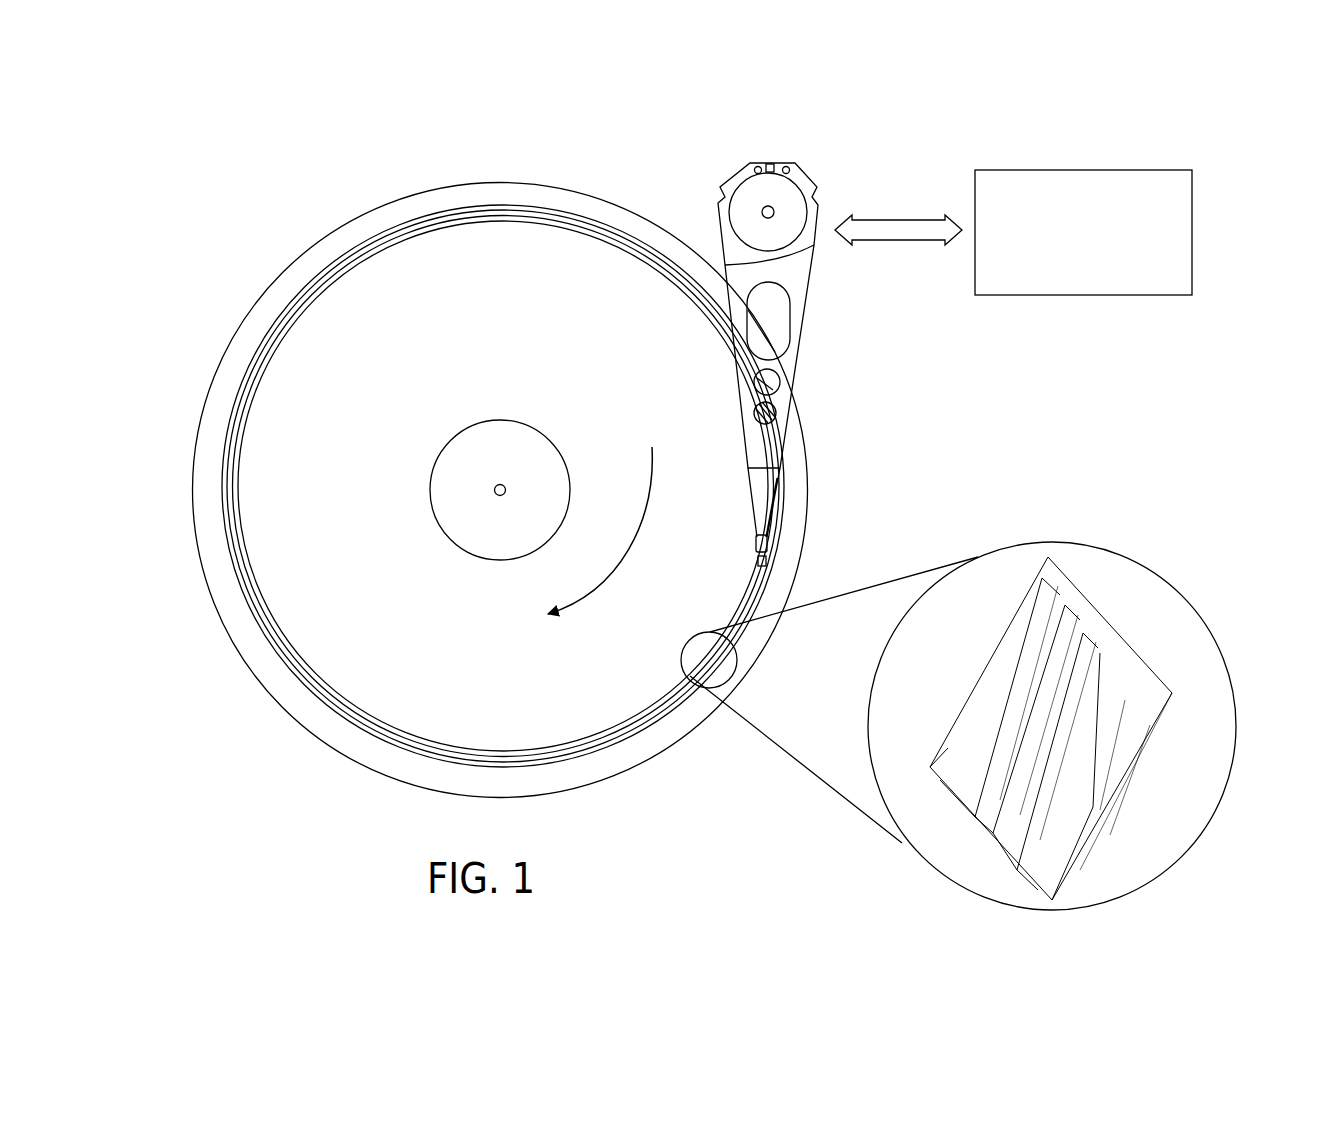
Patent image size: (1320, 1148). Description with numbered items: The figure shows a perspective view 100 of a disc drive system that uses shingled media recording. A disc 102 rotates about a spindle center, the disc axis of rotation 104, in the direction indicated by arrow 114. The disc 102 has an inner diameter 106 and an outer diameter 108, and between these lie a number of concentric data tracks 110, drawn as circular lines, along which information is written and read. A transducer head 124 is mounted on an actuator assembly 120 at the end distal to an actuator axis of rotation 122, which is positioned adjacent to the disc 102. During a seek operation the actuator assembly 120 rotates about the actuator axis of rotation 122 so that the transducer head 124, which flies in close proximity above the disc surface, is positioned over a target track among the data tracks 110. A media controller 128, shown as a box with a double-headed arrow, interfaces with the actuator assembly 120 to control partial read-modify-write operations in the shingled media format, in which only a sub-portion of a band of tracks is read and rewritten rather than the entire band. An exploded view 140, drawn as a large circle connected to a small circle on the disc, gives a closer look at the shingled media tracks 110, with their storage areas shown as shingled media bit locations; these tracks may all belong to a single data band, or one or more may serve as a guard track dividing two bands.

The perspective view 100 is at (262, 163).
The disc 102 is at (572, 192).
The disc axis of rotation 104 is at (470, 427).
The inner diameter 106 is at (494, 486).
The outer diameter 108 is at (387, 231).
The data tracks 110 is at (264, 634).
The arrow 114 is at (650, 446).
The actuator assembly 120 is at (812, 288).
The actuator axis of rotation 122 is at (774, 207).
The transducer head 124 is at (768, 558).
The media controller 128 is at (1013, 232).
The exploded view 140 is at (1150, 880).